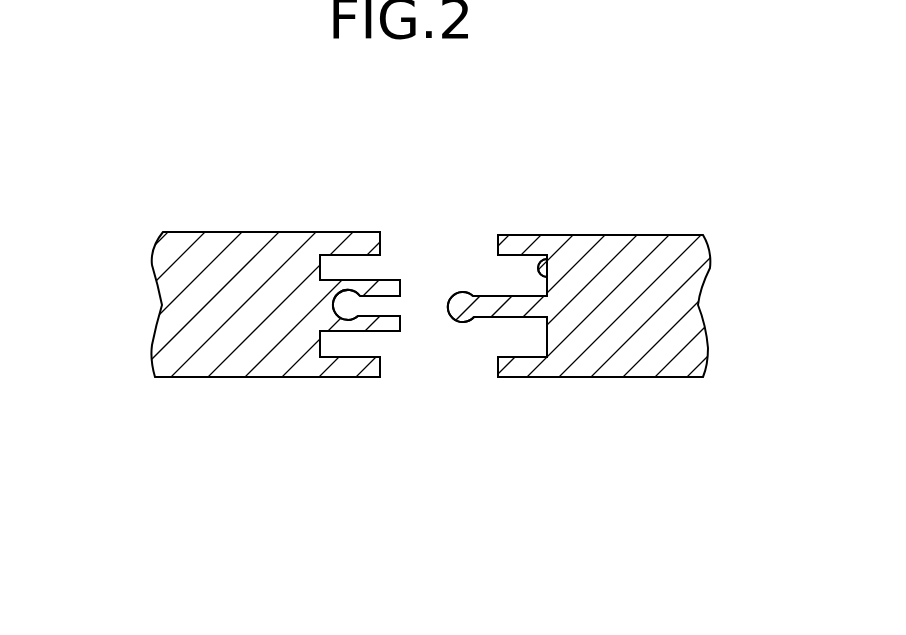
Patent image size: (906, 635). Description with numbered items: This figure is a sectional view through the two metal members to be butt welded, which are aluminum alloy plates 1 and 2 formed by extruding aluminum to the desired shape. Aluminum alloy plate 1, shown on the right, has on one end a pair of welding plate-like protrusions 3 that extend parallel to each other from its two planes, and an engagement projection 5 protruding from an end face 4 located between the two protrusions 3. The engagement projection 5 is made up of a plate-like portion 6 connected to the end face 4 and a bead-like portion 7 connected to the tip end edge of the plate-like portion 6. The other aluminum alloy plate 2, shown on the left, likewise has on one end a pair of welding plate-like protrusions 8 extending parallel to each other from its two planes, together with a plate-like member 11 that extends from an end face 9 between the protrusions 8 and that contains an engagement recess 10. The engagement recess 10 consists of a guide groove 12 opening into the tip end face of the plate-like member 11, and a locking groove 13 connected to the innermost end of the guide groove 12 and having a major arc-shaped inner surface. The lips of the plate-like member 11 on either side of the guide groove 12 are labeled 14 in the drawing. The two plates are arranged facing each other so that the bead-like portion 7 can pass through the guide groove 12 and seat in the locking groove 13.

The aluminum alloy plate 1 is at (712, 257).
The aluminum alloy plate 2 is at (155, 245).
The welding plate-like protrusions 3 is at (517, 246).
The end face 4 is at (540, 262).
The engagement projection 5 is at (473, 280).
The plate-like portion 6 is at (503, 312).
The bead-like portion 7 is at (460, 300).
The welding plate-like protrusions 8 is at (350, 232).
The end face 9 is at (330, 357).
The engagement recess 10 is at (333, 313).
The plate-like member 11 is at (383, 268).
The guide groove 12 is at (403, 304).
The locking groove 13 is at (335, 297).
The lips of slit 14 is at (393, 323).